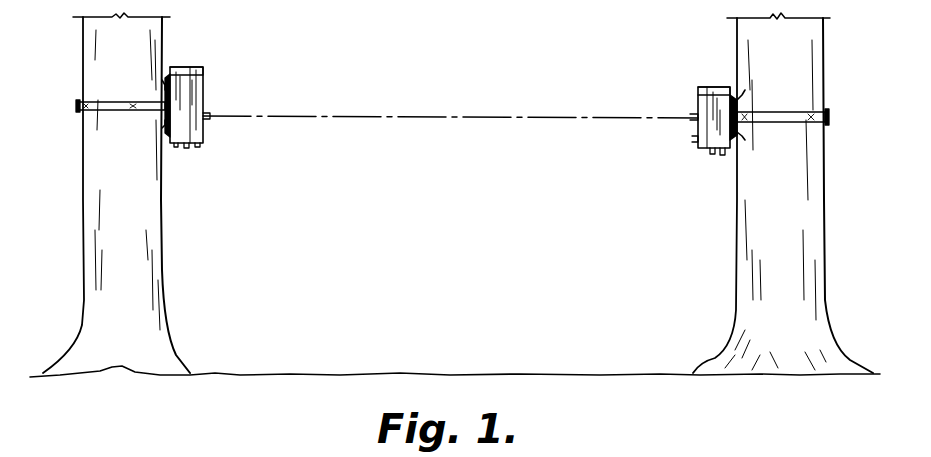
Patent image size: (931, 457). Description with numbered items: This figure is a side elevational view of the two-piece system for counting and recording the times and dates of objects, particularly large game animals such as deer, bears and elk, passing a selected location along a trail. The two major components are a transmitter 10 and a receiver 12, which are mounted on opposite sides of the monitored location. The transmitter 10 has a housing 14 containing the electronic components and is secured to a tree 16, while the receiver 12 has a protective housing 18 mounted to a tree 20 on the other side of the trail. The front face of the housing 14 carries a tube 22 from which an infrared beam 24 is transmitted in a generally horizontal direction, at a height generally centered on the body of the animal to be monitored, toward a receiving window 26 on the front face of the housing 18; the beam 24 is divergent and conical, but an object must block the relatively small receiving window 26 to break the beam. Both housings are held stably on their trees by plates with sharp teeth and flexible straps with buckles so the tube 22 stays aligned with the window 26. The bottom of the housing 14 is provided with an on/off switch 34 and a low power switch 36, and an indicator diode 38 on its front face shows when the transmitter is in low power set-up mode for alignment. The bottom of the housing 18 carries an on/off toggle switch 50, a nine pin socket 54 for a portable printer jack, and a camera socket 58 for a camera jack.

The transmitter 10 is at (705, 53).
The receiver 12 is at (196, 56).
The housing 14 is at (698, 90).
The tree 16 is at (812, 195).
The protective housing 18 is at (180, 66).
The tree 20 is at (100, 228).
The tube 22 is at (690, 117).
The infrared beam 24 is at (460, 117).
The receiving window 26 is at (206, 112).
The on/off switch 34 is at (712, 154).
The low power switch 36 is at (722, 155).
The indicator diode 38 is at (692, 139).
The on/off toggle switch 50 is at (176, 147).
The nine pin socket 54 is at (187, 147).
The camera socket 58 is at (198, 145).